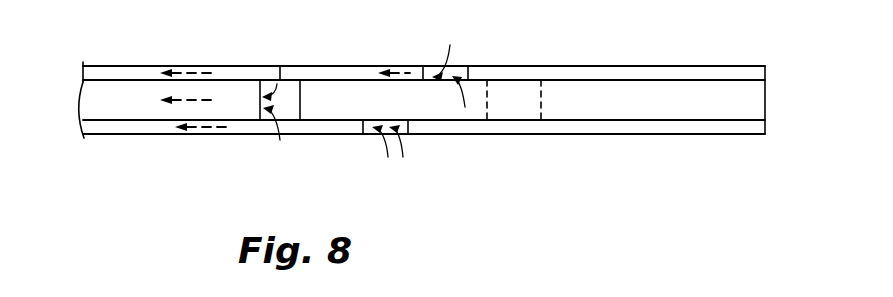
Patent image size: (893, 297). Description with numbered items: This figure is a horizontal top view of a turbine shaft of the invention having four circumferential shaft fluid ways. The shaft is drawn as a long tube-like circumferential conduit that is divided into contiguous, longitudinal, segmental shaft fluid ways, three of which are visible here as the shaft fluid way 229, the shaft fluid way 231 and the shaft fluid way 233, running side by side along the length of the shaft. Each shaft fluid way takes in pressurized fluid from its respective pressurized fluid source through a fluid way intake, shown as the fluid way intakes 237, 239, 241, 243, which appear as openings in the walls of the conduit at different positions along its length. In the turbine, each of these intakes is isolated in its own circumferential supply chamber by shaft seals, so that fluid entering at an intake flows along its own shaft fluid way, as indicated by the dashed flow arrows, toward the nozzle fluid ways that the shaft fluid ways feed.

The segmental shaft fluid way 229 is at (245, 72).
The segmental shaft fluid way 231 is at (112, 105).
The segmental shaft fluid way 233 is at (100, 128).
The fluid way intake 237 is at (302, 97).
The fluid way intake 239 is at (412, 133).
The fluid way intake 241 is at (470, 73).
The fluid way intake 243 is at (542, 103).